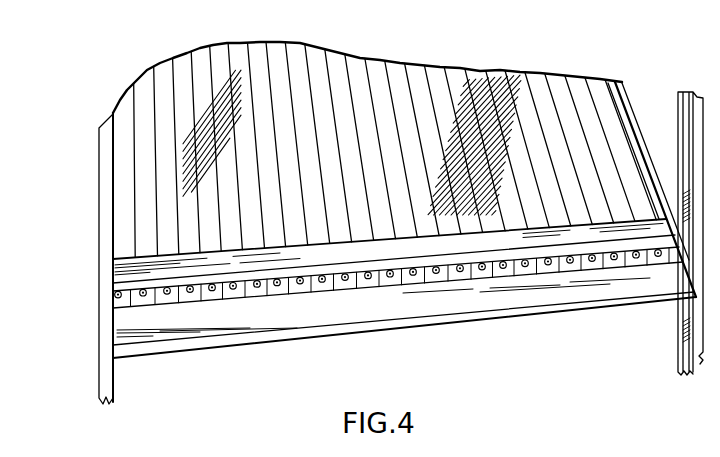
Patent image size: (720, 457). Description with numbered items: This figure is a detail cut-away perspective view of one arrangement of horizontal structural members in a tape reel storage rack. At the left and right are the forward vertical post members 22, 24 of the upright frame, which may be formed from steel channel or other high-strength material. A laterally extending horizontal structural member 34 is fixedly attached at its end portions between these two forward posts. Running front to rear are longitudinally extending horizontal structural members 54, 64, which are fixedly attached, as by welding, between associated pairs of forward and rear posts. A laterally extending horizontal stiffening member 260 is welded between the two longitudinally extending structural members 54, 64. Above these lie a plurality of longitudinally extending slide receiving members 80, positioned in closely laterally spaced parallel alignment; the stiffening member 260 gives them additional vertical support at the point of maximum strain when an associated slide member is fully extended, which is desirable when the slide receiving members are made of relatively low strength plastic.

The vertical post member 22 is at (697, 320).
The vertical post member 24 is at (107, 372).
The laterally extending horizontal structural member 34 is at (451, 305).
The longitudinally extending horizontal structural member 54 is at (120, 143).
The longitudinally extending horizontal structural member 64 is at (632, 115).
The slide receiving member 80 is at (553, 74).
The laterally extending horizontal stiffening member 260 is at (413, 253).